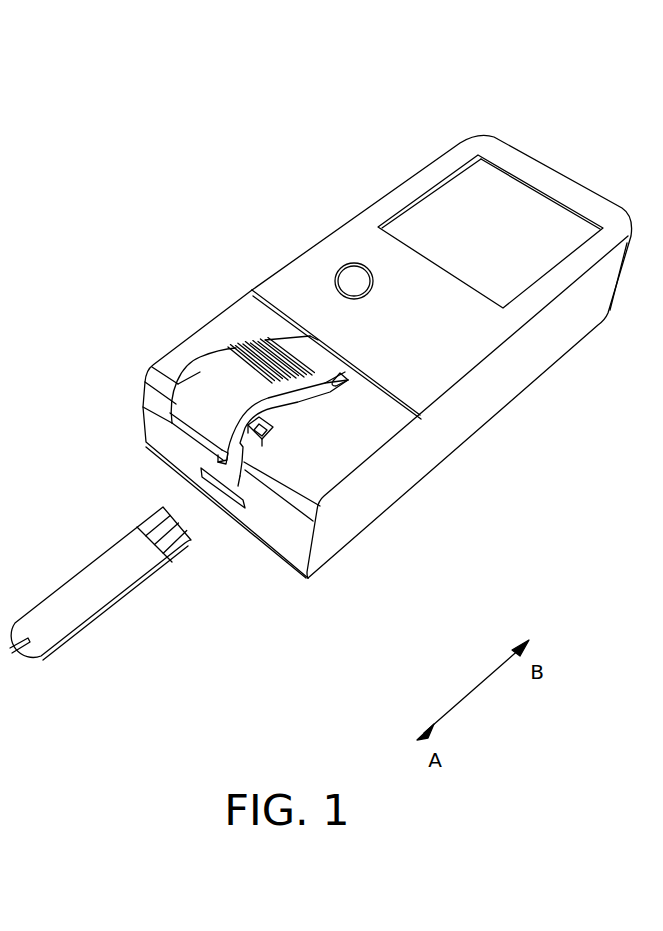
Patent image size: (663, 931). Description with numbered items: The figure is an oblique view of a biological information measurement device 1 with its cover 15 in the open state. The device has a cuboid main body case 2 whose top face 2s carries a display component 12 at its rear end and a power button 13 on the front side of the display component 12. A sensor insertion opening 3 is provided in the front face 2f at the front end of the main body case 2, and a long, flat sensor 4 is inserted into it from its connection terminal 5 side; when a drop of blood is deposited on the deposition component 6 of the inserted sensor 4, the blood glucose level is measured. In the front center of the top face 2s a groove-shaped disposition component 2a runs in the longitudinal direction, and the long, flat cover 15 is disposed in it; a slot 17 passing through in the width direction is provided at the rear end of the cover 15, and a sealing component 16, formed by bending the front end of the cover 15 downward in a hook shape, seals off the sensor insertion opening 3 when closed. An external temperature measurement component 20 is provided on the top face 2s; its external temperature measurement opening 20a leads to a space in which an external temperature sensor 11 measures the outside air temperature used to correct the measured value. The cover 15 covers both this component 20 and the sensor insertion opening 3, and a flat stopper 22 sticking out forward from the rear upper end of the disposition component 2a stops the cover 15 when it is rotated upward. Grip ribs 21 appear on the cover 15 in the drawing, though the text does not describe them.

The biological information measurement device 1 is at (387, 347).
The main body case 2 is at (310, 245).
The disposition component 2a is at (285, 417).
The front face 2f is at (163, 435).
The top face 2s is at (203, 345).
The sensor insertion opening 3 is at (230, 510).
The sensor 4 is at (114, 635).
The connection terminal 5 is at (173, 533).
The deposition component 6 is at (20, 673).
The external temperature sensor 11 is at (262, 447).
The display component 12 is at (467, 202).
The power button 13 is at (350, 264).
The cover 15 is at (205, 388).
The sealing component 16 is at (243, 462).
The slot 17 is at (328, 387).
The external temperature measurement component 20 is at (385, 498).
The external temperature measurement opening 20a is at (266, 432).
The ribs 21 is at (250, 340).
The stopper 22 is at (338, 348).